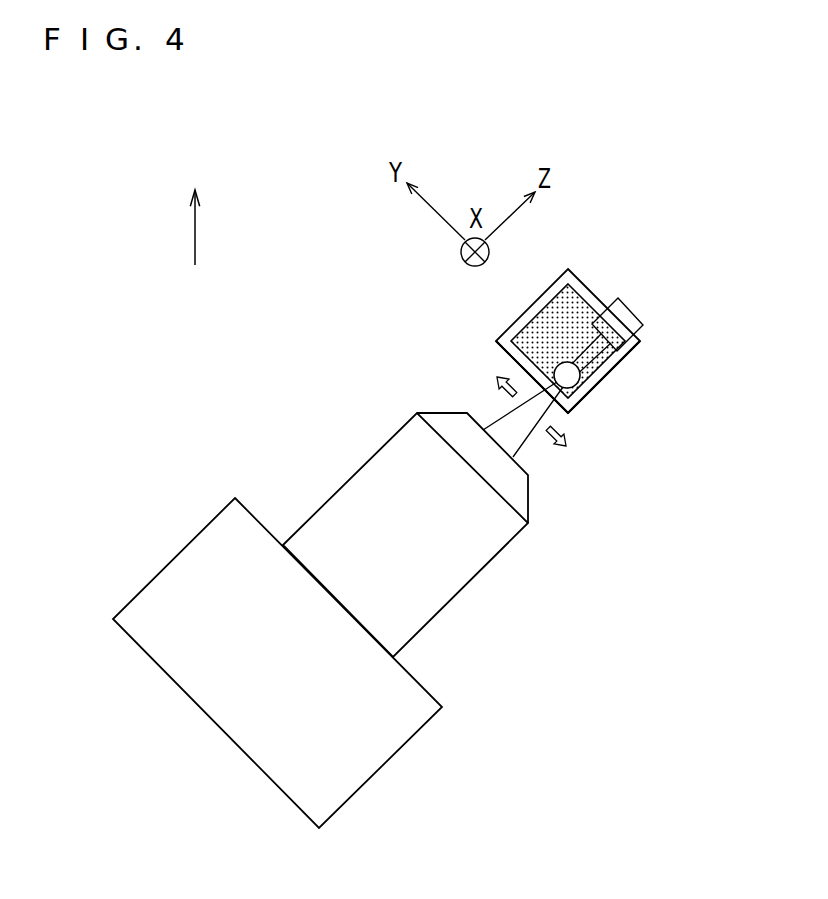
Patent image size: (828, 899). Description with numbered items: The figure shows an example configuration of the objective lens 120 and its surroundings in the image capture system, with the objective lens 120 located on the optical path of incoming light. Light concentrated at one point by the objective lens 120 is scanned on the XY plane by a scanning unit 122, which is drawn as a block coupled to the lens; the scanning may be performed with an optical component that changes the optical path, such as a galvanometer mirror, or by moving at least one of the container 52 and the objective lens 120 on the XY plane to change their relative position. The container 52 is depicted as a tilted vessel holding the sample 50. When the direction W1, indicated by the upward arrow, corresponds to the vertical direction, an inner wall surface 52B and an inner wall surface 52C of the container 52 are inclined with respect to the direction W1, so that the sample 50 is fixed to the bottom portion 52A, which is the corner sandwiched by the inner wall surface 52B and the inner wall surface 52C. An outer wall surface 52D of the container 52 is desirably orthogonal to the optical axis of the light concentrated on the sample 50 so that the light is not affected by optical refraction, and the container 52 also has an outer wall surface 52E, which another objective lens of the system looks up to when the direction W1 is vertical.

The sample 50 is at (580, 377).
The container 52 is at (580, 281).
The bottom portion 52A is at (572, 403).
The inner wall surface 52B is at (529, 357).
The inner wall surface 52C is at (616, 325).
The outer wall surface 52D is at (535, 380).
The outer wall surface 52E is at (618, 363).
The objective lens 120 is at (473, 580).
The scanning unit 122 is at (390, 760).
The direction W1 is at (197, 227).